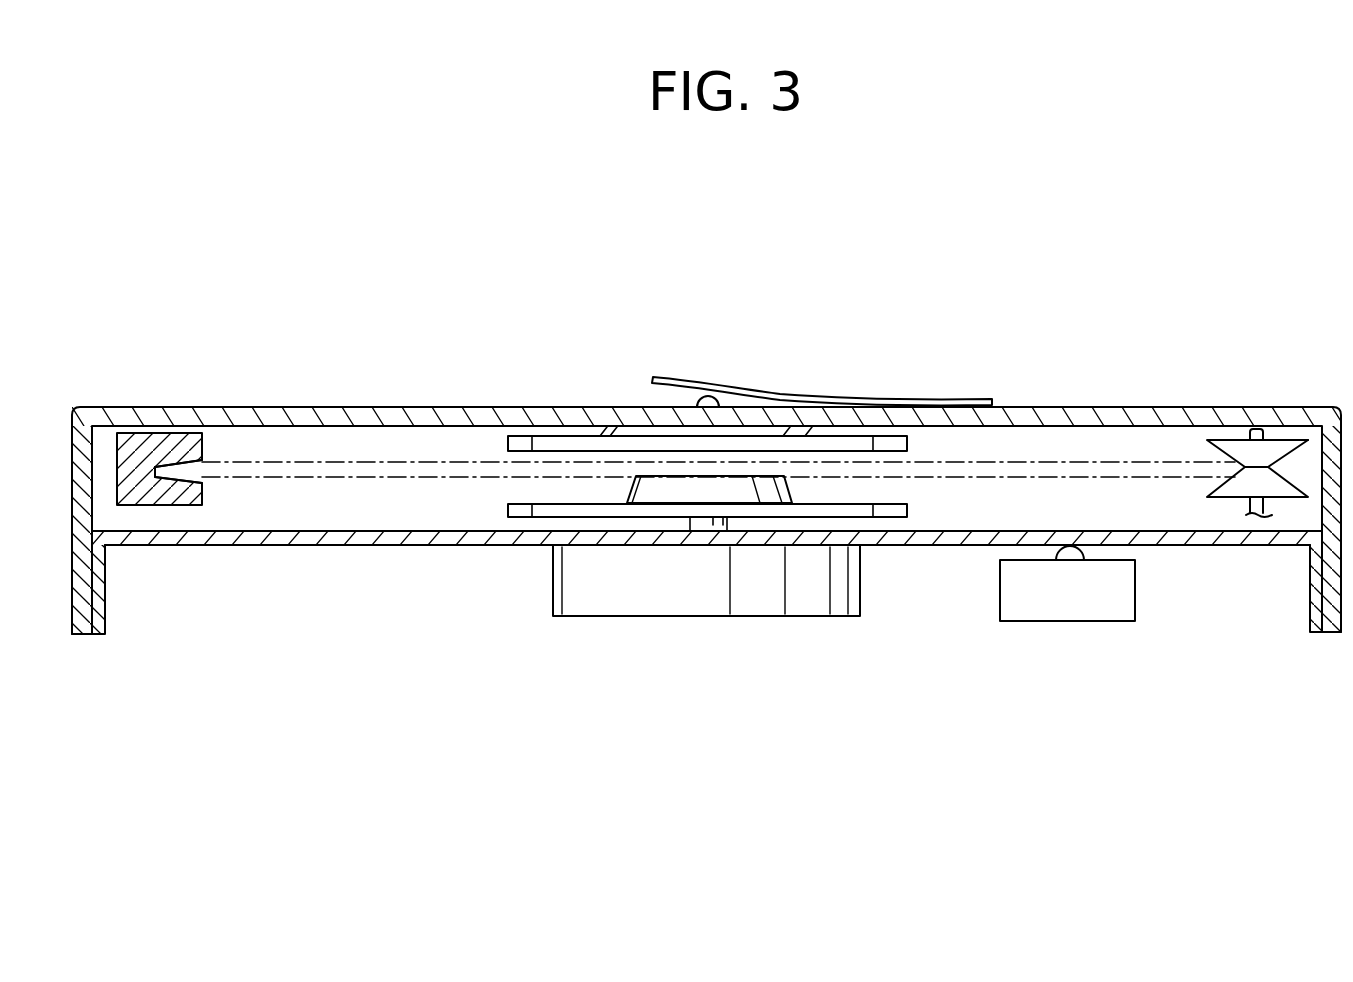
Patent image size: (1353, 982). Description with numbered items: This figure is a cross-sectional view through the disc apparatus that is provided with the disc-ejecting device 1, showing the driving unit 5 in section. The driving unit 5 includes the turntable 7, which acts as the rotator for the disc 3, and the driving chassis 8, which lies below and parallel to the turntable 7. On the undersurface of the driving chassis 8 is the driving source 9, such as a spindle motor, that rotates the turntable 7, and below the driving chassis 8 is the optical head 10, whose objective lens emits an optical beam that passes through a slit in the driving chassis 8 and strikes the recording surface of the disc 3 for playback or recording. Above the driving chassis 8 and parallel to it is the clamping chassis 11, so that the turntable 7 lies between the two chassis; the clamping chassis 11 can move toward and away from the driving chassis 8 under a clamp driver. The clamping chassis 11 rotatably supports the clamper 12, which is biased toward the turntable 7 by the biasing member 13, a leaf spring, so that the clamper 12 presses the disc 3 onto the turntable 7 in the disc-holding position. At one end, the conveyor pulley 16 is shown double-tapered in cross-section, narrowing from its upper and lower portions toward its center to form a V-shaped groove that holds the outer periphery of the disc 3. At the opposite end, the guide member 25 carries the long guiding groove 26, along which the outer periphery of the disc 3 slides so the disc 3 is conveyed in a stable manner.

The driving unit 5 is at (915, 314).
The disc-ejecting device 1 is at (1227, 433).
The conveyor pulley 16 is at (1283, 440).
The clamping chassis 11 is at (380, 408).
The driving chassis 8 is at (265, 545).
The guide member 25 is at (133, 457).
The guiding groove 26 is at (193, 462).
The disc 3 is at (407, 478).
The clamper 12 is at (552, 426).
The turntable 7 is at (892, 512).
The biasing member 13 is at (735, 393).
The driving source 9 is at (647, 592).
The optical head 10 is at (1060, 588).